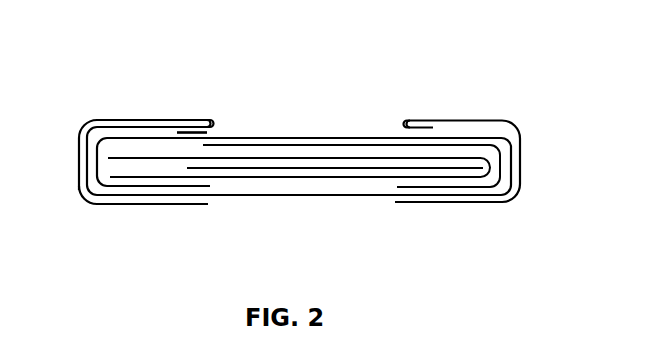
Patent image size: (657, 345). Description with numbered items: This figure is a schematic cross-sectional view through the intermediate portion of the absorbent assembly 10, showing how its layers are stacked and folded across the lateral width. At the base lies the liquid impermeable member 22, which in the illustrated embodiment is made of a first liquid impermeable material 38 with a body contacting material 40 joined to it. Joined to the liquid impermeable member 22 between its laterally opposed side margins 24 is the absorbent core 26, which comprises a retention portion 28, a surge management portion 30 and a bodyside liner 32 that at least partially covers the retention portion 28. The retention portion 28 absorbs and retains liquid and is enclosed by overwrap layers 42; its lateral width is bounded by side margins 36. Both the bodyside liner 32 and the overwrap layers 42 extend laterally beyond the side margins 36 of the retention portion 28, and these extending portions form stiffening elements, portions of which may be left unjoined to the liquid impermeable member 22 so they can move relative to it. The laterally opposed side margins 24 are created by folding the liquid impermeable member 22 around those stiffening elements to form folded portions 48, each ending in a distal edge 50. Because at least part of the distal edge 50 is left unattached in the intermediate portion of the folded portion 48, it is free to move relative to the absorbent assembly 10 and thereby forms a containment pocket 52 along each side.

The absorbent assembly 10 is at (156, 58).
The liquid impermeable member 22 is at (521, 134).
The laterally opposed side margins 24 is at (78, 156).
The absorbent core 26 is at (270, 125).
The retention portion 28 is at (297, 170).
The surge management portion 30 is at (325, 144).
The bodyside liner 32 is at (290, 136).
The side margins 36 is at (430, 168).
The first liquid impermeable material 38 is at (369, 198).
The body contacting material 40 is at (147, 206).
The overwrap layers 42 is at (448, 156).
The folded portions 48 is at (214, 110).
The distal edge 50 is at (216, 120).
The containment pocket 52 is at (374, 118).